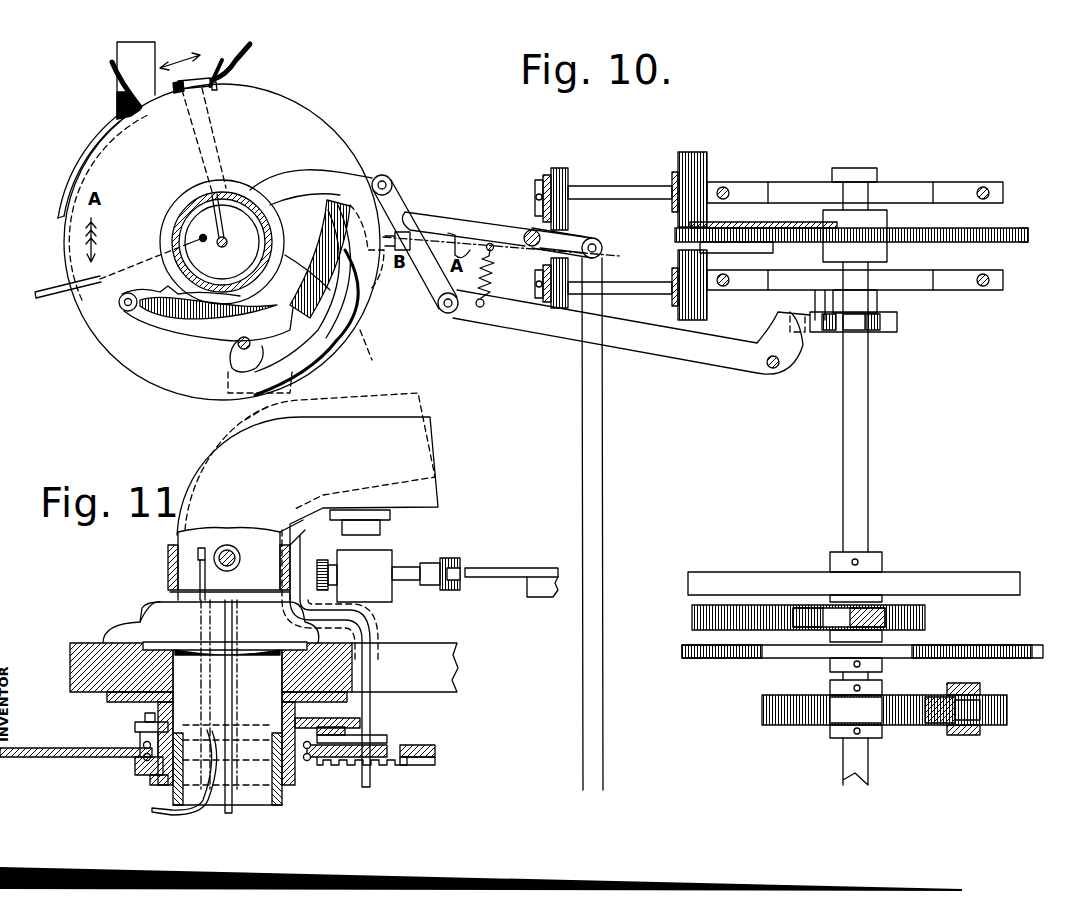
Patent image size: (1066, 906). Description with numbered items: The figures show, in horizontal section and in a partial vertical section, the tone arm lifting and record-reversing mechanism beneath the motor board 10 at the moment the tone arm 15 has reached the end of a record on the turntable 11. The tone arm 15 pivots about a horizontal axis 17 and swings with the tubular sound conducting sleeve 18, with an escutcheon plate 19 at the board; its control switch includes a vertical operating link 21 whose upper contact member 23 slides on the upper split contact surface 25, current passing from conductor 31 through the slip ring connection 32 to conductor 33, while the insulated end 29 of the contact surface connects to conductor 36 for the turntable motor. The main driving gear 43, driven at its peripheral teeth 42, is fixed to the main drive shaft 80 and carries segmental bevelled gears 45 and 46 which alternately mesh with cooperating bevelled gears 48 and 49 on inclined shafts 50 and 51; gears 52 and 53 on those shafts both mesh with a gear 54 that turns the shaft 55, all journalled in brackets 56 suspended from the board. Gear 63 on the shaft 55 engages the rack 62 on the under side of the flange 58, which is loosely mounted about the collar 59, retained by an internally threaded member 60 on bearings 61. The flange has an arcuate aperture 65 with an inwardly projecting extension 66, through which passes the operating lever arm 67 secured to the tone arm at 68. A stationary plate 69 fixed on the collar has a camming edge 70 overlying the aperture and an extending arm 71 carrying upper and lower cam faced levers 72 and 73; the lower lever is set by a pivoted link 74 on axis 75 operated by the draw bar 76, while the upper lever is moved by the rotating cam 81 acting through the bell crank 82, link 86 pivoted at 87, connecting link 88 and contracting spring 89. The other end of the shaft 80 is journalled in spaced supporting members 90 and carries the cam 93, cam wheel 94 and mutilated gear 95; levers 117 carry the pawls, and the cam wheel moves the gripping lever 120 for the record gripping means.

In FIG. 11, the motor board 10 is at (70, 676).
In FIG. 10, the turntable 11 is at (187, 73).
In FIG. 11, the turntable 11 is at (525, 598).
In FIG. 11, the tone arm 15 is at (307, 464).
In FIG. 11, the horizontal axis 17 is at (230, 545).
In FIG. 10, the tubular sound conducting sleeve 18 is at (272, 242).
In FIG. 11, the tubular sound conducting sleeve 18 is at (283, 800).
In FIG. 11, the escutcheon plate 19 is at (135, 625).
In FIG. 10, the vertical operating link 21 is at (220, 247).
In FIG. 11, the vertical operating link 21 is at (233, 768).
In FIG. 10, the upper contact member 23 is at (201, 89).
In FIG. 10, the upper split contact surface 25 is at (220, 60).
In FIG. 10, the end of upper contact surface 29 is at (88, 165).
In FIG. 10, the conductor 31 is at (55, 290).
In FIG. 11, the conductor 31 is at (206, 790).
In FIG. 11, the slip ring connection 32 is at (245, 548).
In FIG. 10, the conductor 33 is at (251, 48).
In FIG. 10, the conductor 36 is at (112, 82).
In FIG. 10, the peripheral edge teeth 42 is at (1010, 240).
In FIG. 10, the main driving gear 43 is at (998, 228).
In FIG. 10, the segmental bevelled gear 45 is at (748, 222).
In FIG. 10, the segmental bevelled gear 46 is at (760, 253).
In FIG. 10, the cooperating bevelled gear 48 is at (700, 152).
In FIG. 10, the cooperating bevelled gear 49 is at (708, 312).
In FIG. 10, the inclined shaft 50 is at (620, 186).
In FIG. 10, the inclined shaft 51 is at (622, 282).
In FIG. 10, the gear 52 is at (565, 168).
In FIG. 10, the gear 53 is at (560, 308).
In FIG. 10, the gear 54 is at (575, 232).
In FIG. 10, the shaft 55 is at (452, 230).
In FIG. 10, the brackets 56 is at (545, 178).
In FIG. 10, the flange 58 is at (325, 135).
In FIG. 11, the flange 58 is at (436, 748).
In FIG. 10, the collar 59 is at (175, 210).
In FIG. 11, the collar 59 is at (155, 786).
In FIG. 10, the internally threaded member 60 is at (232, 182).
In FIG. 11, the internally threaded member 60 is at (336, 766).
In FIG. 11, the bearings 61 is at (135, 745).
In FIG. 10, the rack 62 is at (352, 325).
In FIG. 11, the rack 62 is at (425, 766).
In FIG. 10, the gear 63 is at (372, 280).
In FIG. 10, the arcuate aperture 65 is at (230, 366).
In FIG. 11, the arcuate aperture 65 is at (390, 745).
In FIG. 10, the inwardly projecting extension 66 is at (258, 368).
In FIG. 10, the operating lever arm 67 is at (238, 345).
In FIG. 11, the operating lever arm 67 is at (372, 680).
In FIG. 11, the securing point 68 is at (382, 528).
In FIG. 10, the stationary plate 69 is at (268, 198).
In FIG. 11, the stationary plate 69 is at (137, 726).
In FIG. 10, the camming edge 70 is at (330, 335).
In FIG. 11, the camming edge 70 is at (388, 740).
In FIG. 10, the extending arm 71 is at (140, 292).
In FIG. 10, the upper cam faced lever 72 is at (172, 320).
In FIG. 11, the upper cam faced lever 72 is at (330, 722).
In FIG. 10, the lower cam faced lever 73 is at (288, 300).
In FIG. 11, the lower cam faced lever 73 is at (347, 730).
In FIG. 10, the pivoted link 74 is at (470, 215).
In FIG. 10, the axis 75 is at (527, 230).
In FIG. 10, the draw bar 76 is at (582, 416).
In FIG. 10, the main drive shaft 80 is at (870, 416).
In FIG. 10, the rotating cam 81 is at (898, 325).
In FIG. 10, the bell crank 82 is at (868, 327).
In FIG. 10, the link 86 is at (673, 348).
In FIG. 10, the pivot shaft 87 is at (771, 368).
In FIG. 10, the connecting link 88 is at (435, 300).
In FIG. 10, the contracting spring 89 is at (496, 266).
In FIG. 10, the spaced supporting members 90 is at (918, 572).
In FIG. 10, the cam 93 is at (690, 618).
In FIG. 10, the cam wheel 94 is at (793, 725).
In FIG. 10, the mutilated gear 95 is at (738, 658).
In FIG. 10, the levers 117 is at (822, 620).
In FIG. 10, the gripping lever 120 is at (998, 696).